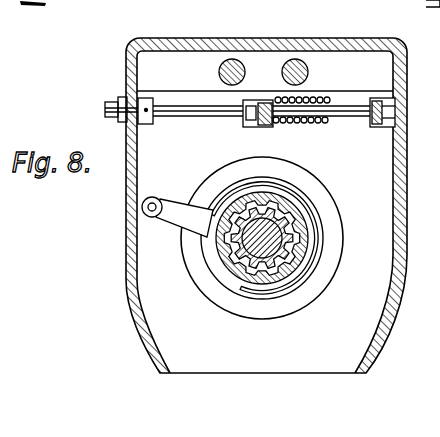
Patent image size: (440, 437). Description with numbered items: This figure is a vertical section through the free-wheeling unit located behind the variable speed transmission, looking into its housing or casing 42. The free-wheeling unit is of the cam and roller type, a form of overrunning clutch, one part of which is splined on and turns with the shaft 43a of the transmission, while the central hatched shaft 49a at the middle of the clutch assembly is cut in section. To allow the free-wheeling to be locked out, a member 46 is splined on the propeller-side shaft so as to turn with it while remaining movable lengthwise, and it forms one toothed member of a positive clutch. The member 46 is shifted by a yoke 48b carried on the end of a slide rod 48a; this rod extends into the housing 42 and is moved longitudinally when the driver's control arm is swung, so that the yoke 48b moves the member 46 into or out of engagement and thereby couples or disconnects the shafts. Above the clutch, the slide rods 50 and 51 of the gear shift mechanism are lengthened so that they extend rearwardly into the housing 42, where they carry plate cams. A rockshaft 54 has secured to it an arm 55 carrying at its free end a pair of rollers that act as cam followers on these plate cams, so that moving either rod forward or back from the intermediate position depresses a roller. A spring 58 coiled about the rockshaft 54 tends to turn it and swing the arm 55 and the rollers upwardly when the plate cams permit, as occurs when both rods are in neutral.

The housing 42 is at (126, 238).
The shaft of the transmission 43a is at (284, 229).
The member 46 is at (294, 206).
The slide rod 48a is at (150, 208).
The yoke 48b is at (230, 203).
The central shaft disc 49a is at (282, 246).
The slide rod 50 is at (309, 72).
The slide rod 51 is at (219, 70).
The rockshaft 54 is at (348, 112).
The arm 55 is at (258, 126).
The spring 58 is at (296, 121).